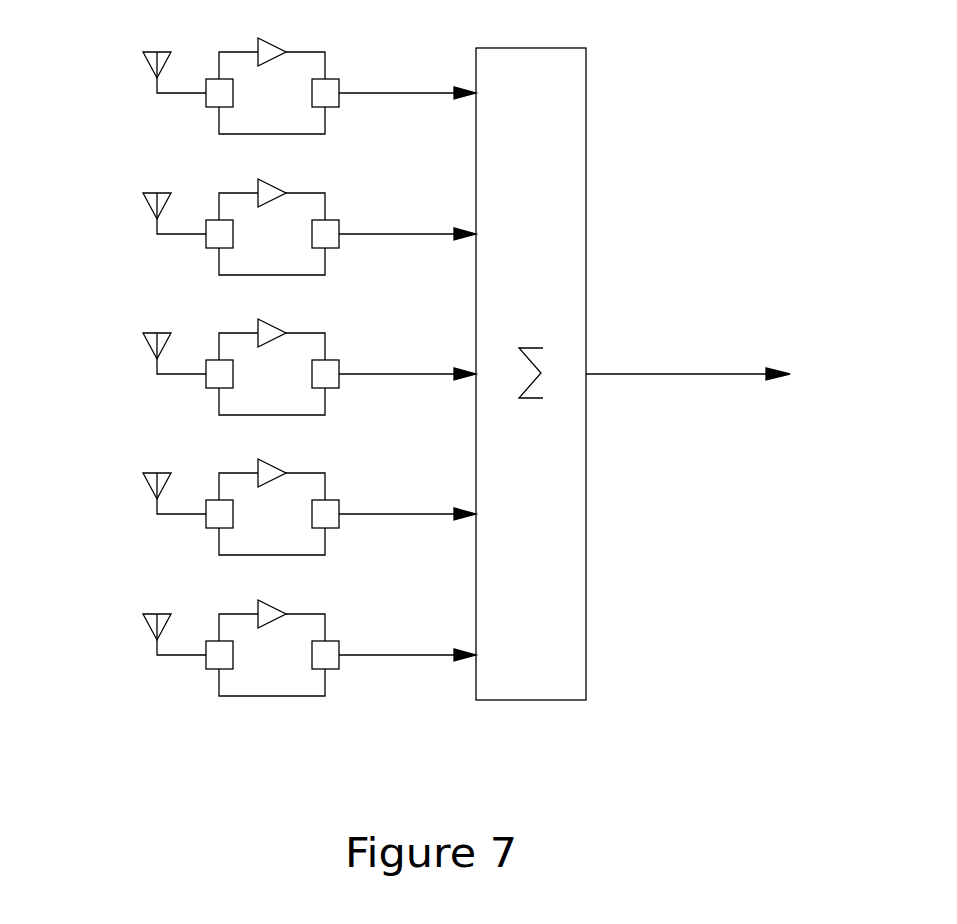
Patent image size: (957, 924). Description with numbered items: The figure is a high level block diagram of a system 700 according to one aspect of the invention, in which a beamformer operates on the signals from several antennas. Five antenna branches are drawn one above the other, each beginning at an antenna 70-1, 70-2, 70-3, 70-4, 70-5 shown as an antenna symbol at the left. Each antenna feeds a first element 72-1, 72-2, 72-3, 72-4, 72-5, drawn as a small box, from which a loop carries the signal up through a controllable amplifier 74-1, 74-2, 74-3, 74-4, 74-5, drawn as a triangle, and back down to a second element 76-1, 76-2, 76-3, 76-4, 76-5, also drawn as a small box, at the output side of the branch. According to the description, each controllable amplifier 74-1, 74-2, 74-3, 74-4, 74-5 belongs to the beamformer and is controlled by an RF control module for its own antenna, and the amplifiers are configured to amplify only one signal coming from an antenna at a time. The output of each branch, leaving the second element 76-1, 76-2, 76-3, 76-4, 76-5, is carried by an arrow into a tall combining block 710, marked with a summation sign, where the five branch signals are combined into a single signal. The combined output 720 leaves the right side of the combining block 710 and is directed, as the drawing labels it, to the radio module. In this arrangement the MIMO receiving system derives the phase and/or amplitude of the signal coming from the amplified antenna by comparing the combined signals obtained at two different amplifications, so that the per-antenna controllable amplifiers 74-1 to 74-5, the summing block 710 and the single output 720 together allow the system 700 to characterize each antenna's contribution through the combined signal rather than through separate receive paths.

The antenna 70-1 is at (150, 71).
The antenna 70-2 is at (126, 208).
The antenna 70-3 is at (126, 348).
The antenna 70-4 is at (126, 488).
The antenna 70-5 is at (126, 629).
The input coupler 72-1 is at (213, 107).
The input coupler 72-2 is at (172, 243).
The input coupler 72-3 is at (172, 383).
The input coupler 72-4 is at (172, 523).
The input coupler 72-5 is at (172, 664).
The controllable amplifier 74-1 is at (258, 46).
The controllable amplifier 74-2 is at (223, 178).
The controllable amplifier 74-3 is at (223, 318).
The controllable amplifier 74-4 is at (223, 458).
The controllable amplifier 74-5 is at (223, 599).
The output coupler 76-1 is at (339, 82).
The output coupler 76-2 is at (337, 198).
The output coupler 76-3 is at (337, 338).
The output coupler 76-4 is at (337, 478).
The output coupler 76-5 is at (337, 619).
The summation block 710 is at (564, 48).
The output to radio module 720 is at (789, 374).
The system 700 is at (711, 580).